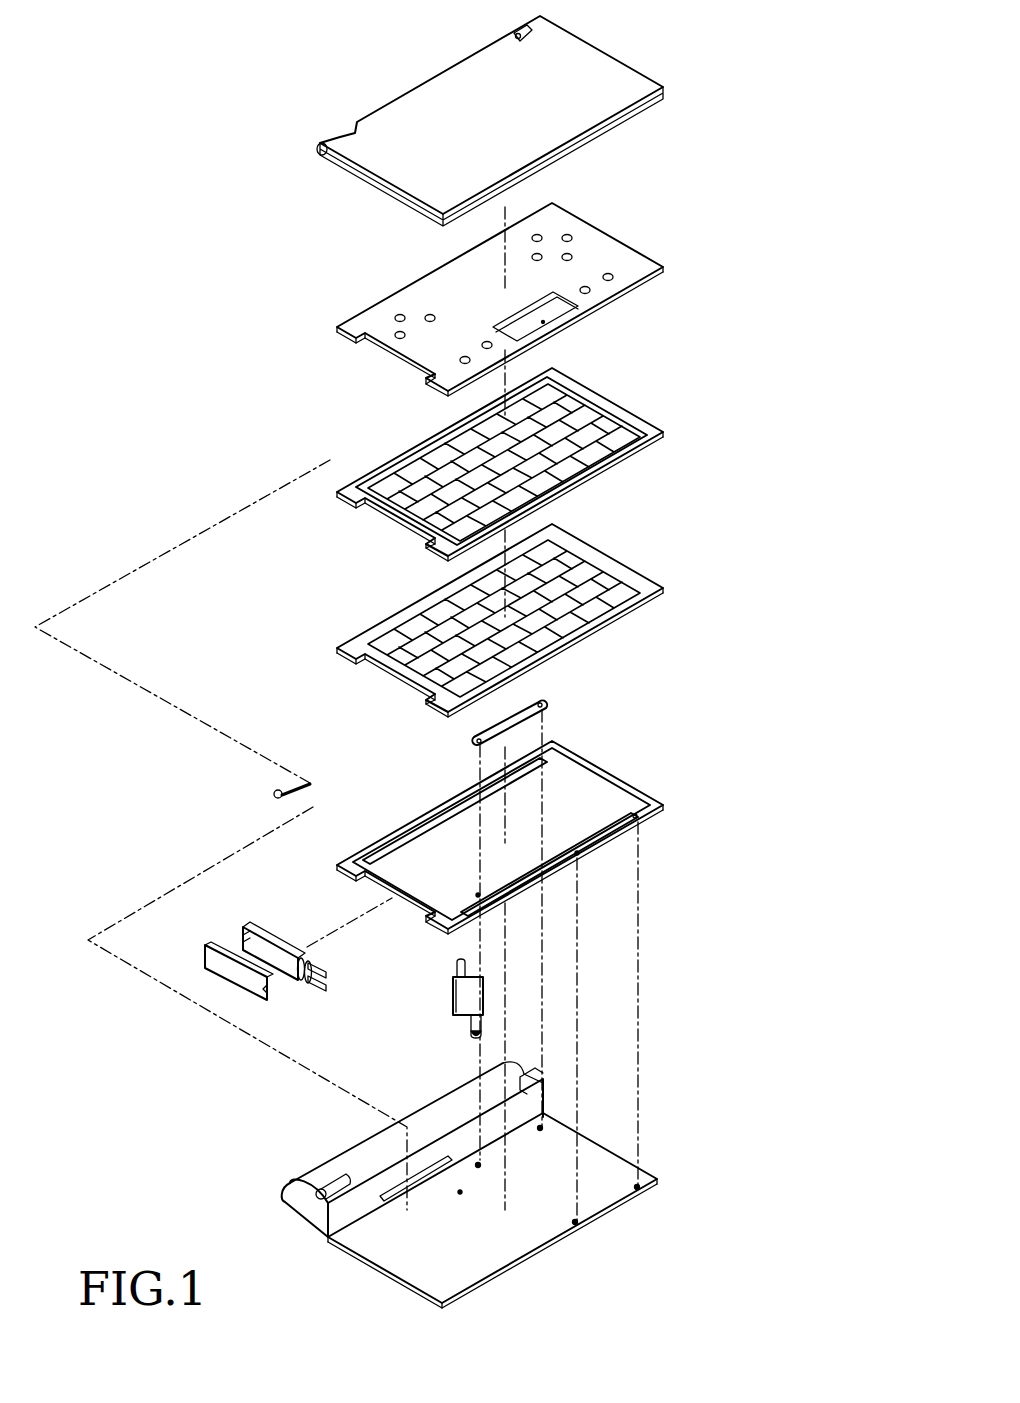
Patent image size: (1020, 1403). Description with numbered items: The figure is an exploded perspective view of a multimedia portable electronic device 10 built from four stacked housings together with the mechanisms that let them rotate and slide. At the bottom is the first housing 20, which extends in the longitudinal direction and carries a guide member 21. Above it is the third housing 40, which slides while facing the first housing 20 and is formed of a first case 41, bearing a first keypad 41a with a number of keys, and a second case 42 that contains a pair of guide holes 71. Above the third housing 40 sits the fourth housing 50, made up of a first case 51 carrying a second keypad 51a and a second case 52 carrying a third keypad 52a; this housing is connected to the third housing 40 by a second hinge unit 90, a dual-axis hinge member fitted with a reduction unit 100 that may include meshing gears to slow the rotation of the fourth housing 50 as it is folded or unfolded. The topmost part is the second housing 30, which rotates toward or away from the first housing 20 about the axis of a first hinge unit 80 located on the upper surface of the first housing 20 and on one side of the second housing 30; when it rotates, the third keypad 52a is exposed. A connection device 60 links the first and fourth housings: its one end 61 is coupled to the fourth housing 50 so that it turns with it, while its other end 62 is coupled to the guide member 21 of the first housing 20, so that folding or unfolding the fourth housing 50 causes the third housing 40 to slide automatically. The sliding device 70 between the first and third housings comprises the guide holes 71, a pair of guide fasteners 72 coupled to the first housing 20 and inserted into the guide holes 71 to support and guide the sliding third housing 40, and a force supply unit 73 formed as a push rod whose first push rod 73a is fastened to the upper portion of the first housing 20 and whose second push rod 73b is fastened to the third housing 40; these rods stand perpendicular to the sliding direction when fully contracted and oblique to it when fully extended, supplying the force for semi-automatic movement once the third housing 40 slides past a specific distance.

The portable electronic device 10 is at (142, 74).
The first housing 20 is at (656, 1162).
The guide member 21 is at (425, 1156).
The second housing 30 is at (615, 47).
The third housing 40 is at (741, 540).
The first case 41 is at (636, 605).
The first keypad 41a is at (607, 582).
The second case 42 is at (623, 780).
The fourth housing 50 is at (741, 425).
The first case 51 is at (598, 403).
The second keypad 51a is at (627, 432).
The second case 52 is at (645, 263).
The third keypad 52a is at (573, 237).
The connection device 60 is at (145, 770).
The one end of connection device 61 is at (308, 782).
The other end of connection device 62 is at (278, 795).
The sliding device 70 is at (796, 850).
The guide holes 71 is at (561, 872).
The guide fasteners 72 is at (622, 842).
The force supply unit 73 is at (741, 985).
The first push rod 73a is at (467, 962).
The second push rod 73b is at (484, 1034).
The first hinge unit 80 is at (512, 35).
The second hinge unit 90 is at (225, 968).
The reduction unit 100 is at (291, 950).